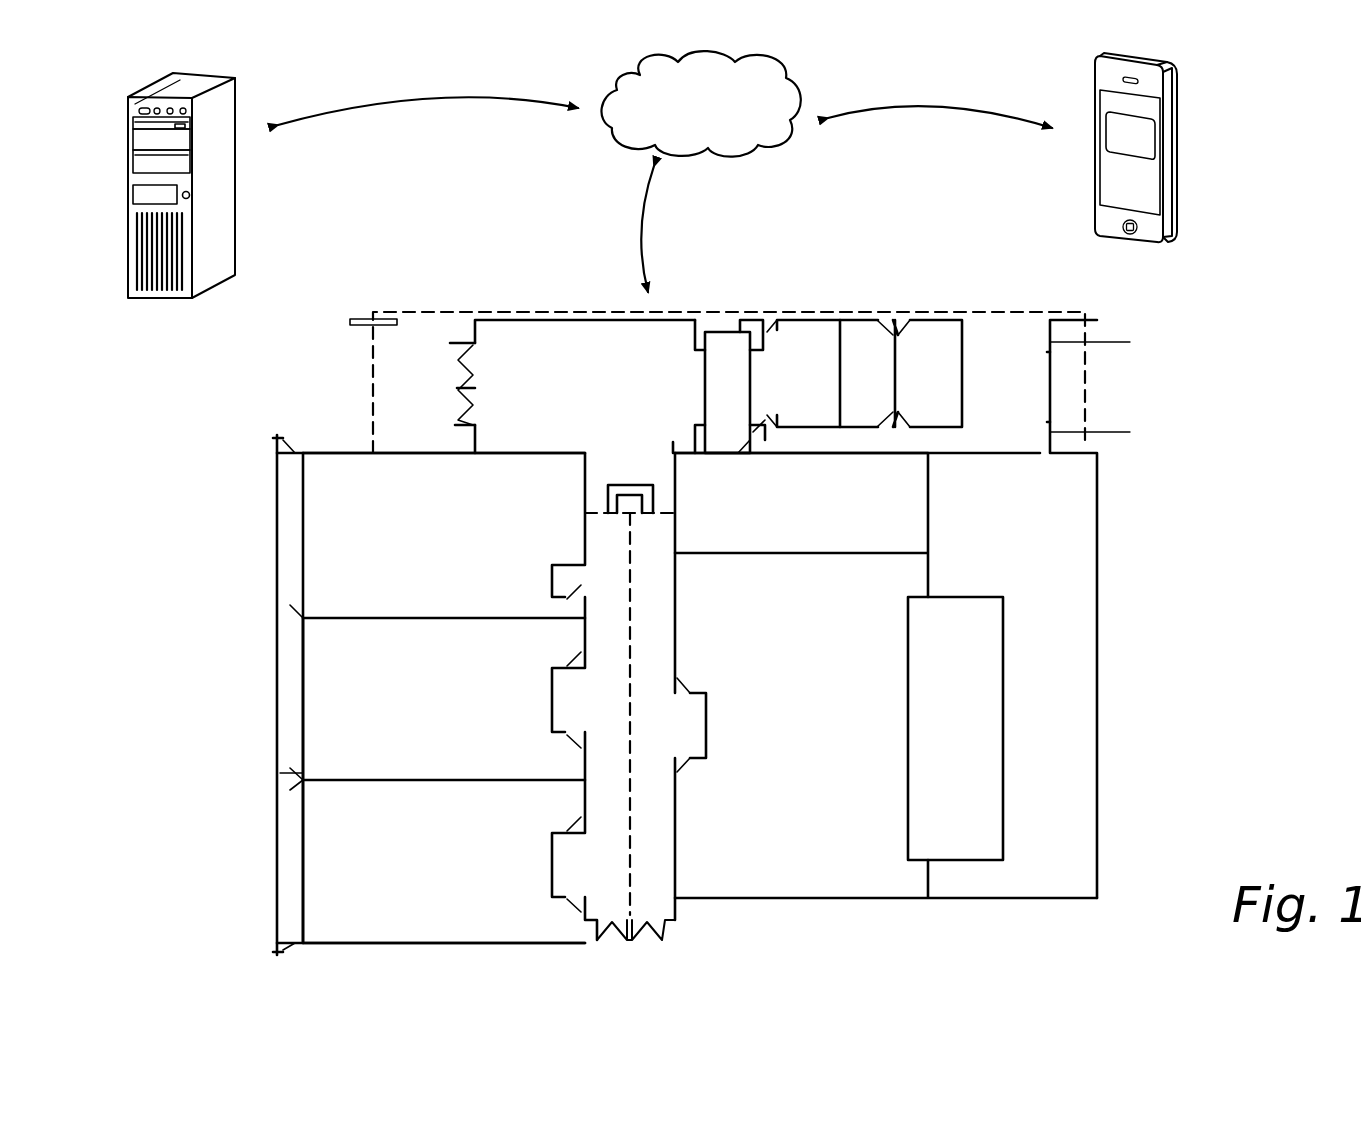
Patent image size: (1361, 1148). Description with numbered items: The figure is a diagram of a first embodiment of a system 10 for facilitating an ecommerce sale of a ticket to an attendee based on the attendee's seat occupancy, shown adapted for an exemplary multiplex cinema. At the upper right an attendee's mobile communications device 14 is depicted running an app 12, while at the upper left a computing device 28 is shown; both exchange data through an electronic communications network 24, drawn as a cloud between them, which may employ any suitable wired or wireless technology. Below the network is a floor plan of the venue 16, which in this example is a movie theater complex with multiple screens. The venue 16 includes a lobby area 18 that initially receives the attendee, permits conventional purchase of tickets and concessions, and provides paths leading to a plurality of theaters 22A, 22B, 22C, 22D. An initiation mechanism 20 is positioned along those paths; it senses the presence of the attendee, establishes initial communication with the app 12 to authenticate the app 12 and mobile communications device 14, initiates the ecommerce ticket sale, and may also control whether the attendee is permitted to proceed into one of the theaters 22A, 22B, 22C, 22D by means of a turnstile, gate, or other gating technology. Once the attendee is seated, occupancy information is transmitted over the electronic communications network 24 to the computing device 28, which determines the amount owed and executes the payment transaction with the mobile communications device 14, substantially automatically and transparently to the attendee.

The system 10 is at (1199, 139).
The app 12 is at (1135, 133).
The mobile communications device 14 is at (1175, 202).
The venue 16 is at (701, 599).
The lobby area 18 is at (638, 356).
The initiation mechanism 20 is at (640, 468).
The theater 22A is at (848, 637).
The theater 22B is at (483, 535).
The theater 22C is at (483, 698).
The theater 22D is at (483, 858).
The electronic communications network 24 is at (752, 103).
The computing device 28 is at (138, 143).